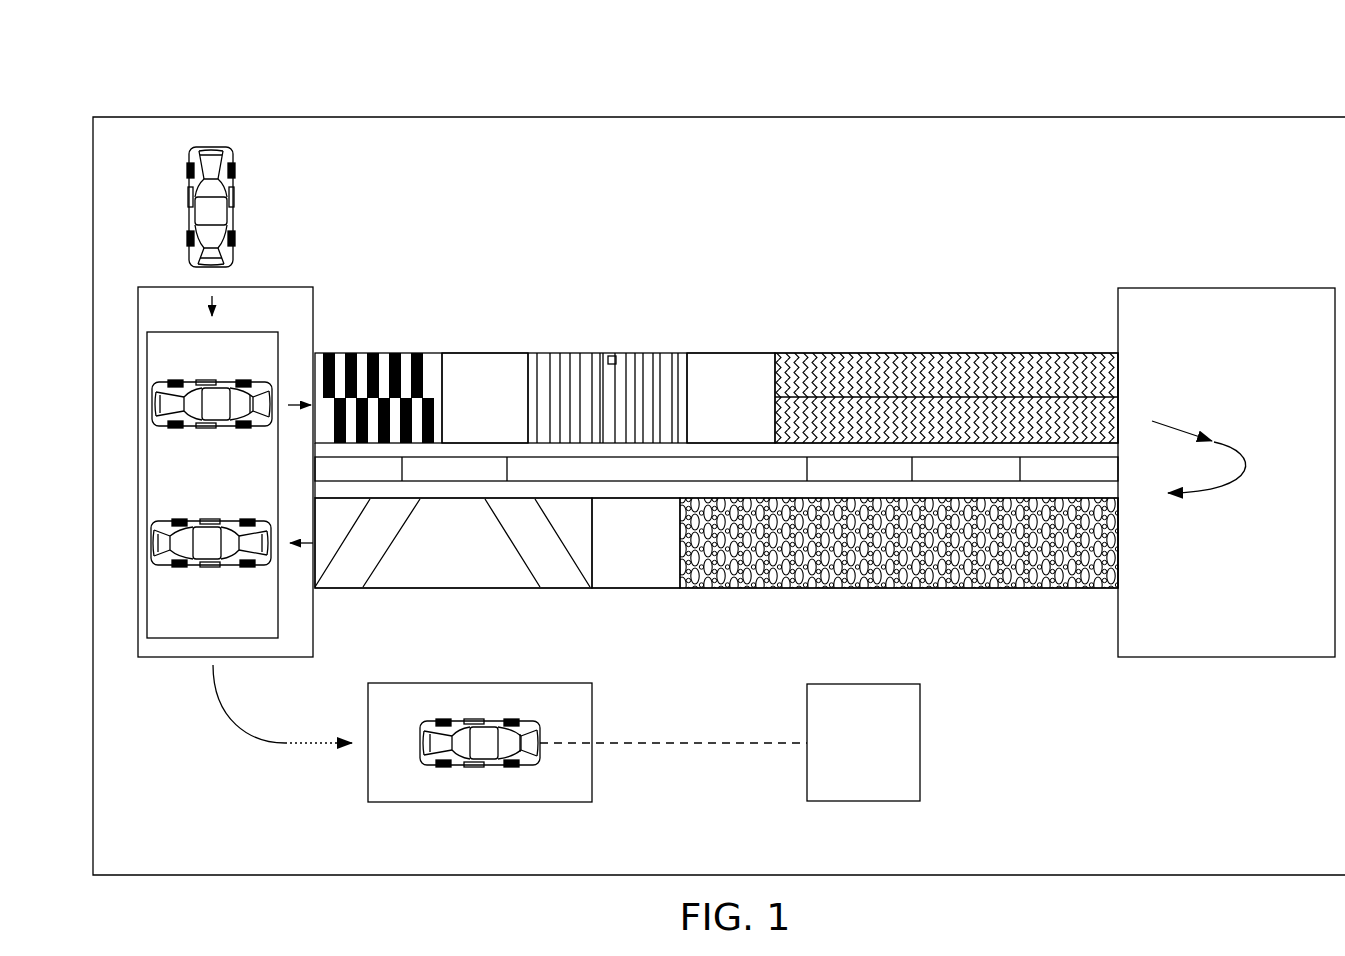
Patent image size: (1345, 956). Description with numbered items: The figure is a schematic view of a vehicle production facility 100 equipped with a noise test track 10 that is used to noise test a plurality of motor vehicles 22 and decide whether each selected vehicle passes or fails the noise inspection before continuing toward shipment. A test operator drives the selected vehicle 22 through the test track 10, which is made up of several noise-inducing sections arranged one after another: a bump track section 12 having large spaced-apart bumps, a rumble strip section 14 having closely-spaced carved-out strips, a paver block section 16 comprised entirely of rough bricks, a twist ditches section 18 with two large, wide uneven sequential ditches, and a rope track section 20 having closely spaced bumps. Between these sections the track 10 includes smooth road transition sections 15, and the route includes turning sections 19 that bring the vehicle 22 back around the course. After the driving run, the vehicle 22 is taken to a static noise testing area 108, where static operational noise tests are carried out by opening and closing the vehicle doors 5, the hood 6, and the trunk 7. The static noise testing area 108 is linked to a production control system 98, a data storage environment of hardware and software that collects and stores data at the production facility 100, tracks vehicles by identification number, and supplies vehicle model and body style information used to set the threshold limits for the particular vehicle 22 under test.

The vehicle production facility 100 is at (792, 99).
The noise test track 10 is at (967, 238).
The bump track section 12 is at (374, 352).
The rumble strip section 14 is at (976, 352).
The smooth road transition section 15 is at (488, 352).
The paver block section 16 is at (931, 592).
The twist ditches section 18 is at (461, 592).
The turning section 19 is at (1236, 441).
The rope track section 20 is at (629, 352).
The motor vehicle 22 is at (252, 183).
The vehicle door 5 is at (197, 200).
The hood 6 is at (215, 252).
The trunk 7 is at (215, 155).
The production control system 98 is at (920, 740).
The static noise testing area 108 is at (598, 722).